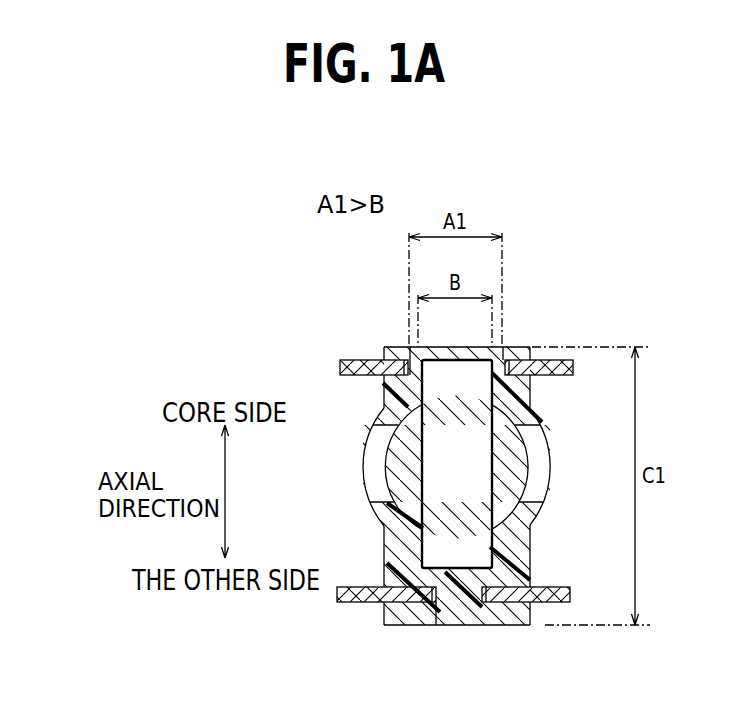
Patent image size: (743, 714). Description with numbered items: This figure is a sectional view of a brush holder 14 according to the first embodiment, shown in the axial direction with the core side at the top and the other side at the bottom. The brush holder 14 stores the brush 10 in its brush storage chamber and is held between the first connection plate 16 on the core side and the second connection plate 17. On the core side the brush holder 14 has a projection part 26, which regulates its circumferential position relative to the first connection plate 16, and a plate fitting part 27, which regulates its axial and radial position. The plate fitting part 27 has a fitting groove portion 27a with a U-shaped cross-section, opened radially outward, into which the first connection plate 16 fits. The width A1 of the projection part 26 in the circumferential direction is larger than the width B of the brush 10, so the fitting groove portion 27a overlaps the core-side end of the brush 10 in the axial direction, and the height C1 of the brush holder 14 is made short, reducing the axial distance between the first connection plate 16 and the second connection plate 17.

The brush 10 is at (462, 453).
The brush holder 14 is at (548, 404).
The first connection plate 16 is at (356, 361).
The second connection plate 17 is at (353, 603).
The projection part 26 is at (475, 352).
The plate fitting part 27 is at (395, 353).
The fitting groove portion 27a is at (405, 374).